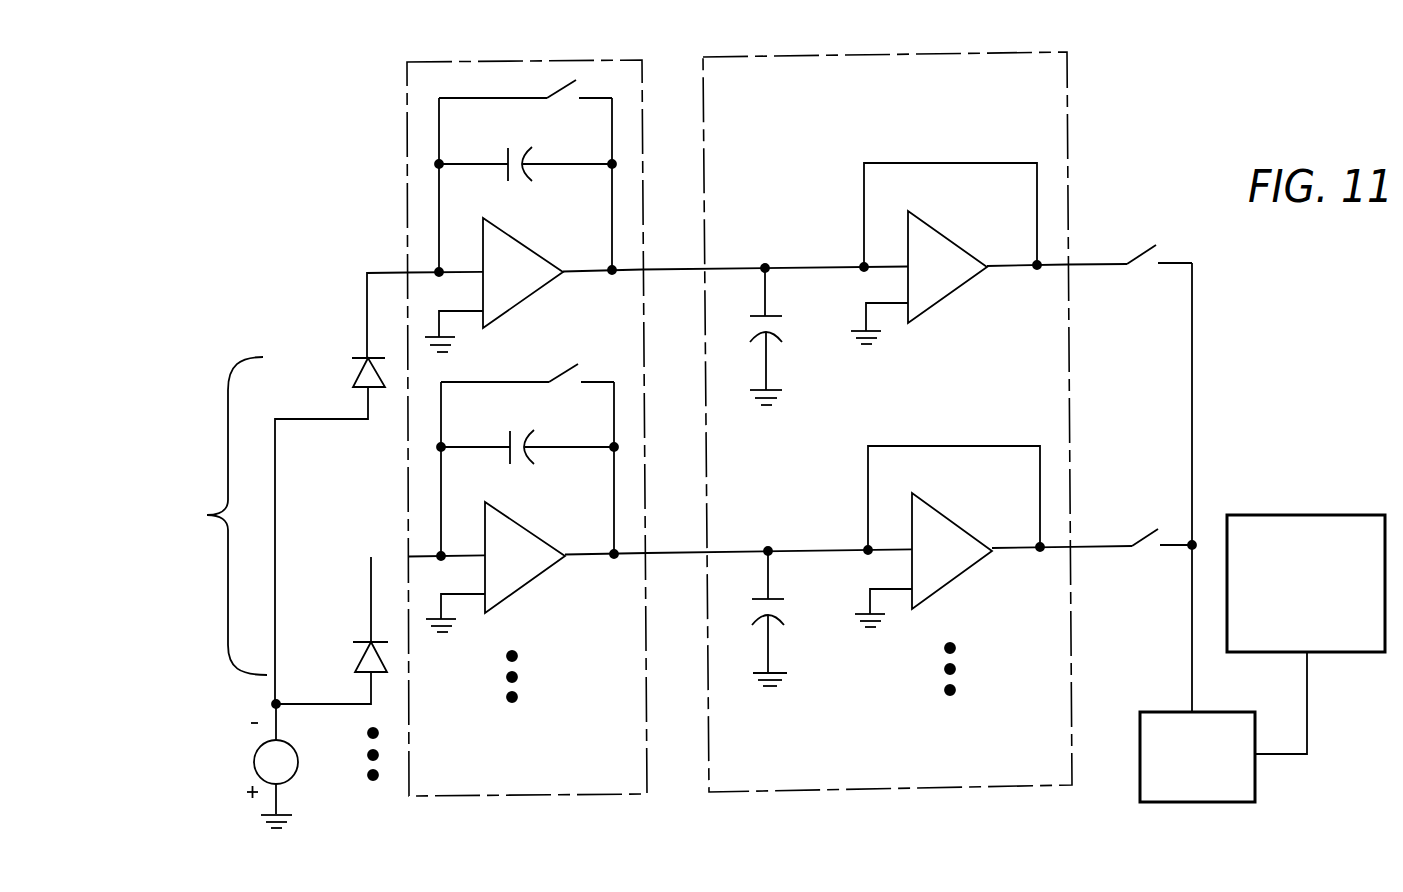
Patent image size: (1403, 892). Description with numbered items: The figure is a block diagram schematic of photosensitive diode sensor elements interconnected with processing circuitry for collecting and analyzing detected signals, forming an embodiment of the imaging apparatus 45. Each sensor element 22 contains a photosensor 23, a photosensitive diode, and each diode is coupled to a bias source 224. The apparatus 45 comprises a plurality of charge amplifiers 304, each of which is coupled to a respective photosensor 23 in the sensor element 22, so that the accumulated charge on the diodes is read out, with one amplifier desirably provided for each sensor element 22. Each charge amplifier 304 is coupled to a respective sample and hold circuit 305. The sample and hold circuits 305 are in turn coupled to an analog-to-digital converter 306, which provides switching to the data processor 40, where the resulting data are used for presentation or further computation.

The sensor element 22 is at (200, 532).
The photosensor 23 is at (358, 376).
The imaging apparatus 45 is at (366, 256).
The bias source 224 is at (298, 766).
The charge amplifier 304 is at (455, 94).
The sample and hold circuit 305 is at (752, 92).
The analog-to-digital converter 306 is at (1178, 747).
The data processor 40 is at (1291, 545).